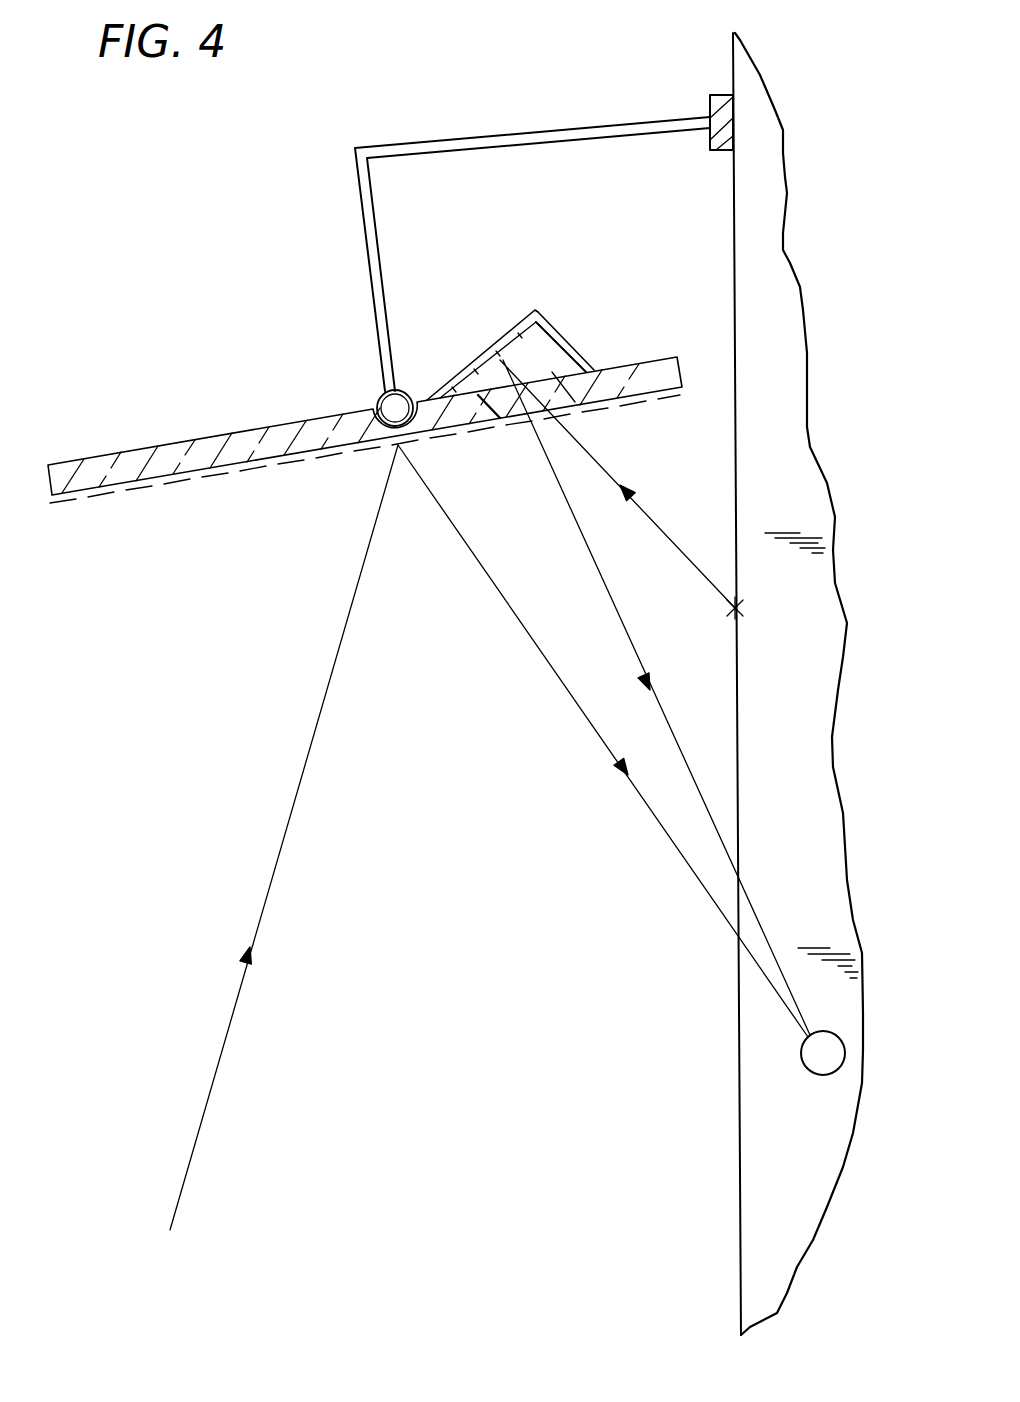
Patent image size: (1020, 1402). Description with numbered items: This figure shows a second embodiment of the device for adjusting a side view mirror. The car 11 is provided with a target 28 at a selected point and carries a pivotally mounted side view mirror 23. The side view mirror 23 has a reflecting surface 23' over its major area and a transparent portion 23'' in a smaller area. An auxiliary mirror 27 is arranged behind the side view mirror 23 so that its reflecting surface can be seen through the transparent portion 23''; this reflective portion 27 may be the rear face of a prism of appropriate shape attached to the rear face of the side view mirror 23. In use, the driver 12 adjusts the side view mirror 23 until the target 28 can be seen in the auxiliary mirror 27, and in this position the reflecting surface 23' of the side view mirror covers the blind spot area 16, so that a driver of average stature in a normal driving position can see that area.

The car 11 is at (735, 287).
The driver 12 is at (817, 1063).
The blind spot area 16 is at (220, 1070).
The side view mirror 23 is at (360, 426).
The reflecting surface 23' is at (365, 459).
The transparent portion 23'' is at (572, 417).
The auxiliary mirror 27 is at (512, 335).
The target 28 is at (742, 607).